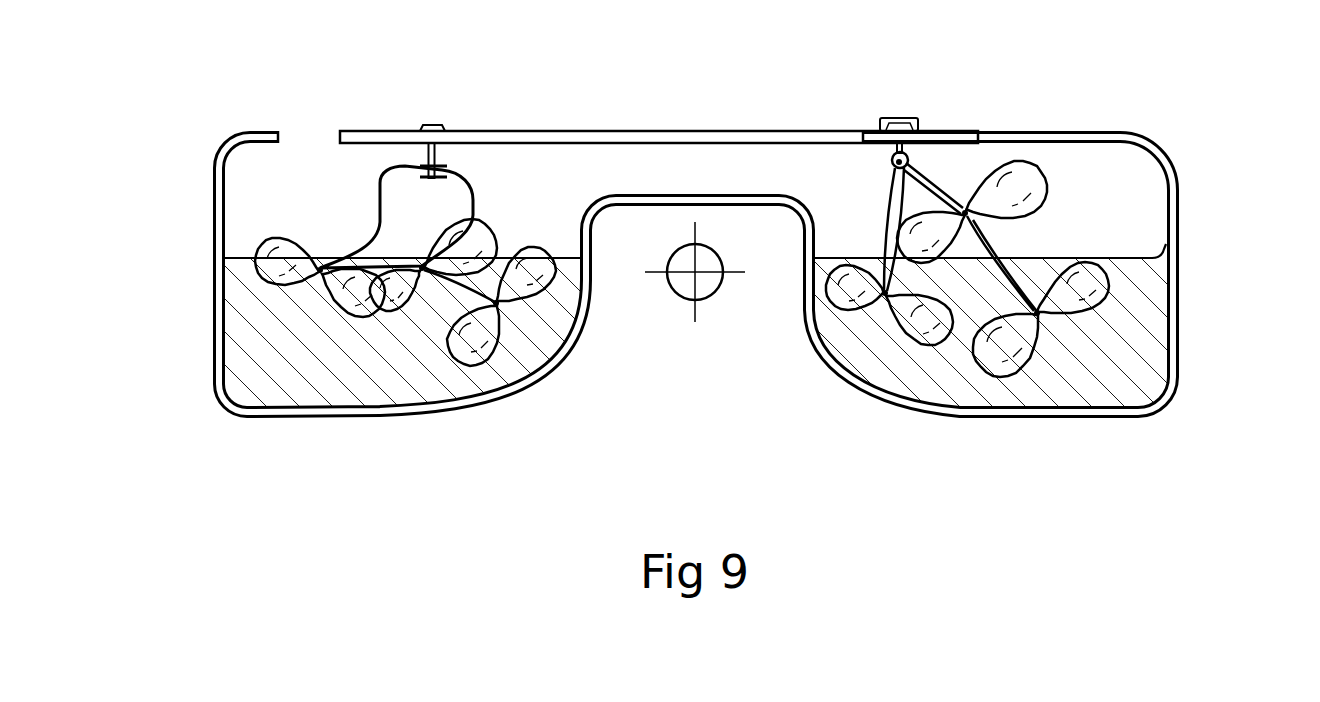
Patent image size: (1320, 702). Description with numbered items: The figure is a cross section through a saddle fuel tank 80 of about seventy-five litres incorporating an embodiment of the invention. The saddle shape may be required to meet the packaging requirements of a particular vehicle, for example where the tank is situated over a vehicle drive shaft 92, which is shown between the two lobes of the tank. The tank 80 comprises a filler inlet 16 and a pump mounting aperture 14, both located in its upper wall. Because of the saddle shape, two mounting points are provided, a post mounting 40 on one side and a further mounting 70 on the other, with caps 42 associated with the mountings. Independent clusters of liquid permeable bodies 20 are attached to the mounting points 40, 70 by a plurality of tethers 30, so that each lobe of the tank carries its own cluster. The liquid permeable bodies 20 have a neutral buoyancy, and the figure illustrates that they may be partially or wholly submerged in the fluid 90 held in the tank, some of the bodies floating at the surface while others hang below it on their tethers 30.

The pump mounting aperture 14 is at (1013, 135).
The filler inlet 16 is at (312, 138).
The liquid permeable bodies 20 is at (974, 358).
The tethers 30 is at (380, 217).
The post mounting 40 is at (440, 155).
The caps 42 is at (900, 118).
The mounting 70 is at (878, 158).
The saddle fuel tank 80 is at (665, 103).
The fluid 90 is at (1162, 246).
The vehicle drive shaft 92 is at (682, 285).